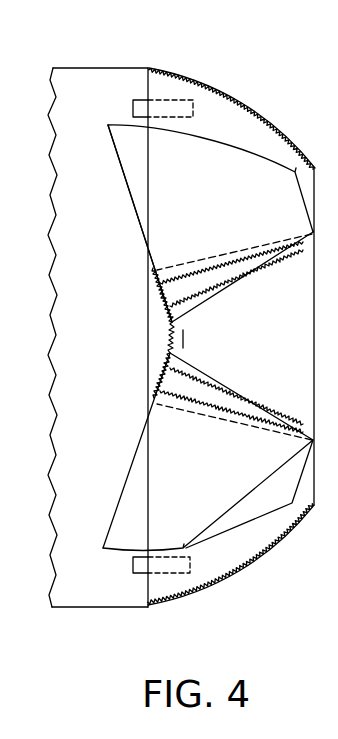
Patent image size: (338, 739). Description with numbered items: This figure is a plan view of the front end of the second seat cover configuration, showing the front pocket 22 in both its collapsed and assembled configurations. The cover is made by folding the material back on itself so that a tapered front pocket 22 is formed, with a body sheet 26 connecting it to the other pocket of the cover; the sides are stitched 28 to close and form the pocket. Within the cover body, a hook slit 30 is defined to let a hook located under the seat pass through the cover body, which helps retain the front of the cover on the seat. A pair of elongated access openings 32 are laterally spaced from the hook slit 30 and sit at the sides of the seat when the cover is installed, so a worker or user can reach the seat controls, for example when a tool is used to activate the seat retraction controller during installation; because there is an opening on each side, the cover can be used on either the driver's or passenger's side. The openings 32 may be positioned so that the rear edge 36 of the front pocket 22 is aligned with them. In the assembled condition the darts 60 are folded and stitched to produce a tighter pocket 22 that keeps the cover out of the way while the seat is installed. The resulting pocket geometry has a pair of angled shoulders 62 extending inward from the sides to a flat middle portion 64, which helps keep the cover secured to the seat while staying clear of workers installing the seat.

The front pocket 22 is at (263, 171).
The body sheet 26 is at (83, 85).
The stitching 28 is at (238, 98).
The hook slit 30 is at (185, 338).
The access openings 32 is at (168, 108).
The rear edge 36 is at (120, 174).
The darts 60 is at (217, 278).
The angled shoulders 62 is at (142, 237).
The flat middle portion 64 is at (168, 338).